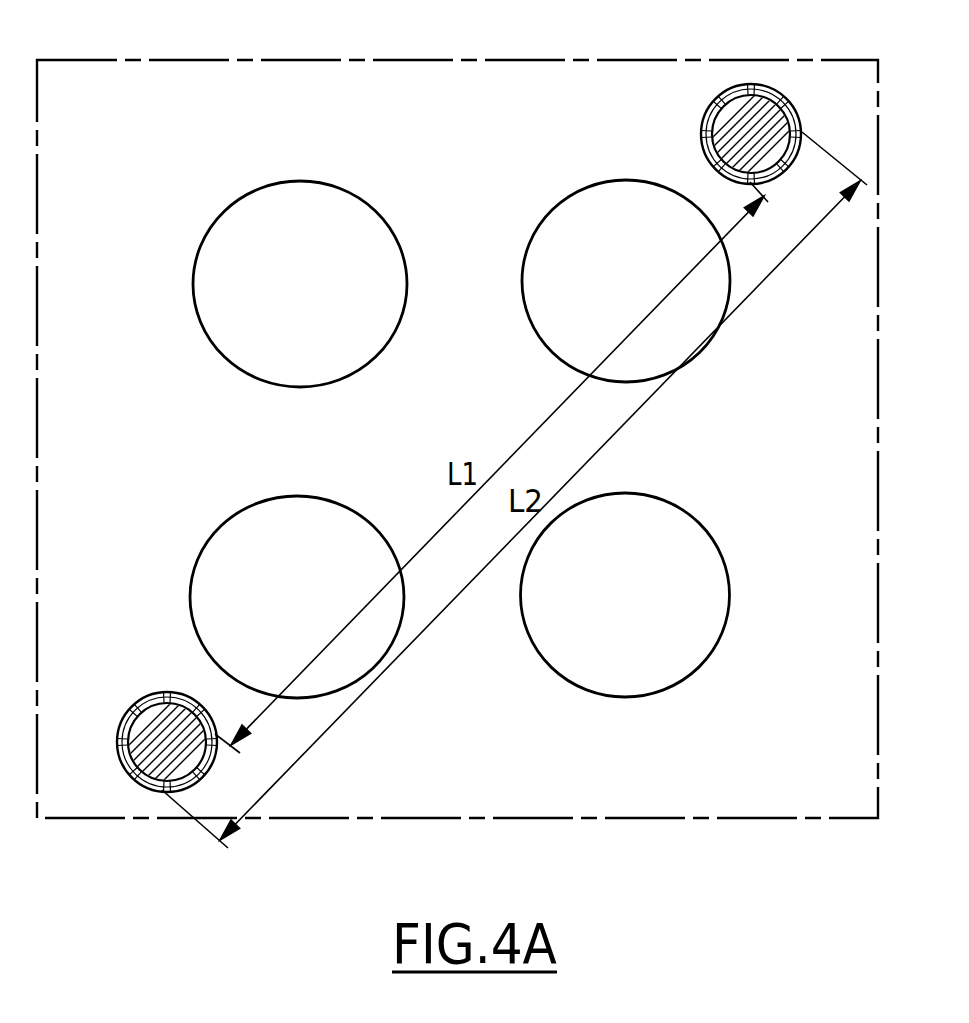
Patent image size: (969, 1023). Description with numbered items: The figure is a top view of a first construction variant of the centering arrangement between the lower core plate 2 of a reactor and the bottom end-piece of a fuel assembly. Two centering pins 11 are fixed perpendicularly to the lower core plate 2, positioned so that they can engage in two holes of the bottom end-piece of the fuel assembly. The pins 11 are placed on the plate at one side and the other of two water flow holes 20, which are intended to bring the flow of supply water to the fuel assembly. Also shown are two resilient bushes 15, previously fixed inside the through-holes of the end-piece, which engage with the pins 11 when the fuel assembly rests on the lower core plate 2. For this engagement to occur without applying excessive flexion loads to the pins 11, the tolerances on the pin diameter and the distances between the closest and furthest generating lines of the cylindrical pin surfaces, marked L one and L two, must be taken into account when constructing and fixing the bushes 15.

The lower core plate 2 is at (457, 439).
The centering pin 11 is at (738, 122).
The resilient bush 15 is at (790, 112).
The water flow hole 20 is at (585, 192).